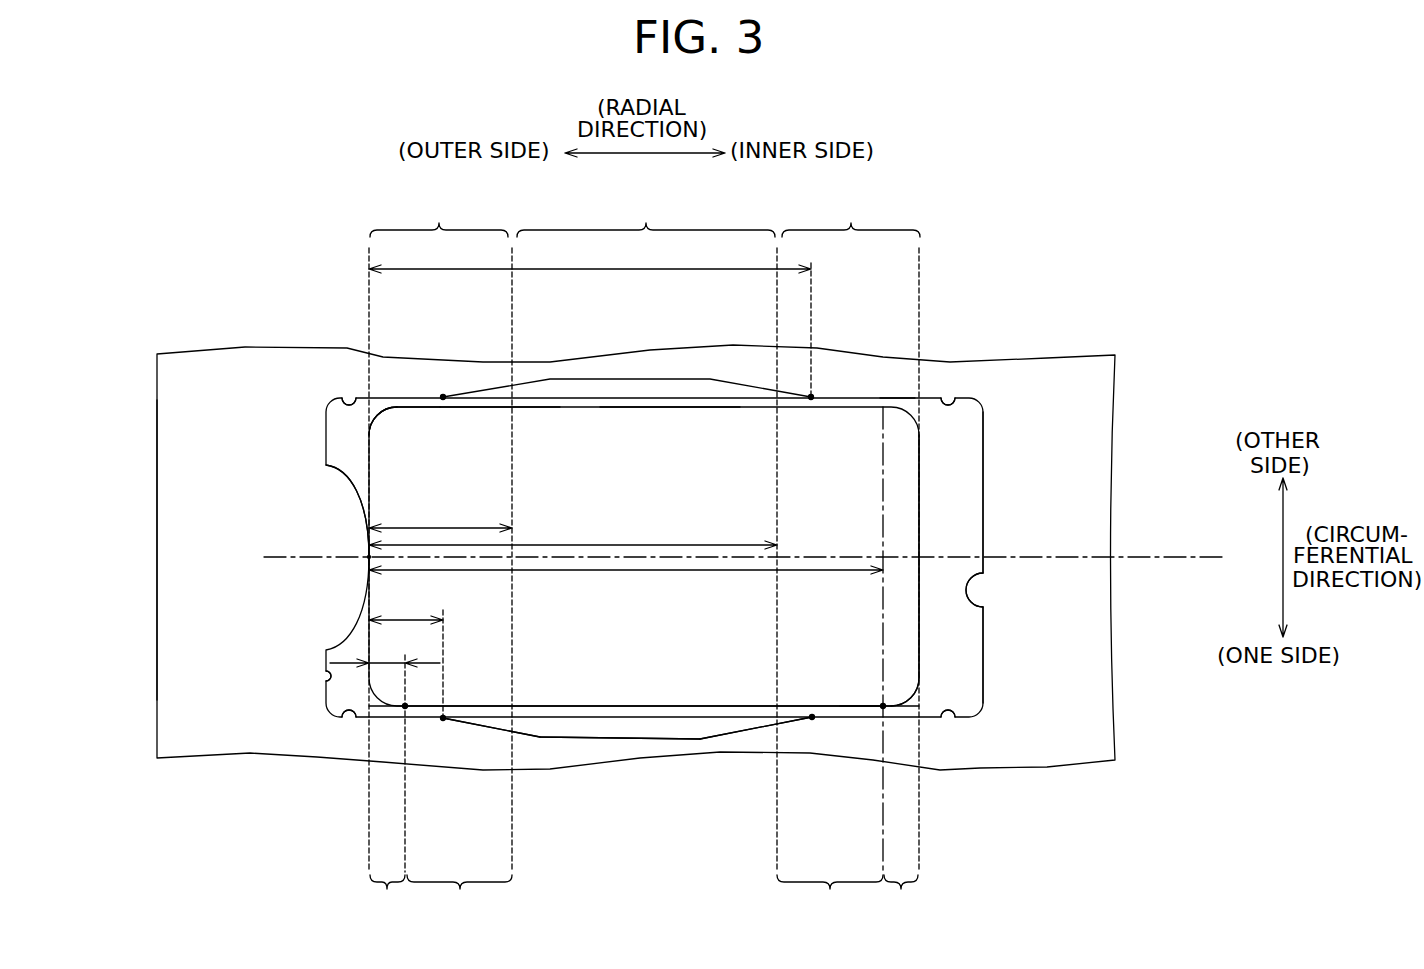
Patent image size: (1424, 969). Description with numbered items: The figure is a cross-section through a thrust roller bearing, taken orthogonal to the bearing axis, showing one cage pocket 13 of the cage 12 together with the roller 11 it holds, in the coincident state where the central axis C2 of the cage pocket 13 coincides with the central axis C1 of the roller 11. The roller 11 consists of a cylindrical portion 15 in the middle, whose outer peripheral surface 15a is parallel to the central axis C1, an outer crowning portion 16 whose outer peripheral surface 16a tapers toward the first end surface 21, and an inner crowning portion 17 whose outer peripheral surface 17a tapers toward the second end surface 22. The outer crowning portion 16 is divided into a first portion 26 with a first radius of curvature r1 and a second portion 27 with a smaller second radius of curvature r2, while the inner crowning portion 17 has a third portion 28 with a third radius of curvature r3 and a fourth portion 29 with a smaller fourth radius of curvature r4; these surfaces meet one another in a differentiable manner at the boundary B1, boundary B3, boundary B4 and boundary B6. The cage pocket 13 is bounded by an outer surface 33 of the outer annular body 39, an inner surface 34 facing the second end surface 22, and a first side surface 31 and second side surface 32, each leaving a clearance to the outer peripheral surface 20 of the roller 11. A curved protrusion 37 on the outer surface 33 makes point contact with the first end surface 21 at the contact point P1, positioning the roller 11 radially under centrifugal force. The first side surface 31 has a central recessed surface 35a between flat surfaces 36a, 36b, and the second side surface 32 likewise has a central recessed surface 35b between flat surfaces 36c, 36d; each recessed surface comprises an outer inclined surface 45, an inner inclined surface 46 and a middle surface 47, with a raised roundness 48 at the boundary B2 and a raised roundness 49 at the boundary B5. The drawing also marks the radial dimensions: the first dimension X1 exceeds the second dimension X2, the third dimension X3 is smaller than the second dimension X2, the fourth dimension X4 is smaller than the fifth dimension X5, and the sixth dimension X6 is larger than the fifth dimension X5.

The roller 11 is at (705, 720).
The cage 12 is at (141, 632).
The cage pocket 13 is at (341, 447).
The cylindrical portion 15 is at (646, 212).
The outer peripheral surface of the cylindrical portion 15a is at (667, 407).
The outer crowning portion 16 is at (439, 212).
The outer peripheral surface of the outer crowning portion 16a is at (393, 401).
The inner crowning portion 17 is at (851, 212).
The outer peripheral surface of the inner crowning portion 17a is at (897, 398).
The outer peripheral surface of the roller 20 is at (645, 708).
The first end surface 21 is at (354, 492).
The second end surface 22 is at (920, 630).
The first portion 26 is at (458, 586).
The second portion 27 is at (387, 586).
The third portion 28 is at (830, 665).
The fourth portion 29 is at (901, 586).
The first side surface 31 is at (937, 700).
The second side surface 32 is at (937, 415).
The outer surface 33 is at (323, 673).
The inner surface 34 is at (977, 574).
The central recessed surface 35a is at (590, 724).
The central recessed surface 35b is at (617, 392).
The flat surface 36a is at (345, 718).
The flat surface 36b is at (958, 722).
The flat surface 36c is at (343, 396).
The flat surface 36d is at (958, 397).
The protrusion 37 is at (372, 586).
The outer annular body 39 is at (154, 519).
The outer inclined surface 45 is at (524, 737).
The inner inclined surface 46 is at (750, 727).
The middle surface 47 is at (612, 737).
The raised roundness 48 is at (443, 397).
The raised roundness 49 is at (812, 397).
The boundary B1 is at (522, 478).
The boundary B2 is at (447, 400).
The boundary B3 is at (405, 708).
The boundary B4 is at (777, 493).
The boundary B5 is at (811, 399).
The boundary B6 is at (883, 708).
The central axis of the roller C1 is at (747, 516).
The central axis of the cage pocket C2 is at (1187, 553).
The contact point P1 is at (366, 557).
The first radius of curvature r1 is at (431, 421).
The second radius of curvature r2 is at (417, 458).
The third radius of curvature r3 is at (859, 690).
The fourth radius of curvature r4 is at (903, 679).
The first dimension X1 is at (440, 516).
The second dimension X2 is at (406, 654).
The third dimension X3 is at (385, 651).
The fourth dimension X4 is at (573, 532).
The fifth dimension X5 is at (590, 319).
The sixth dimension X6 is at (626, 585).